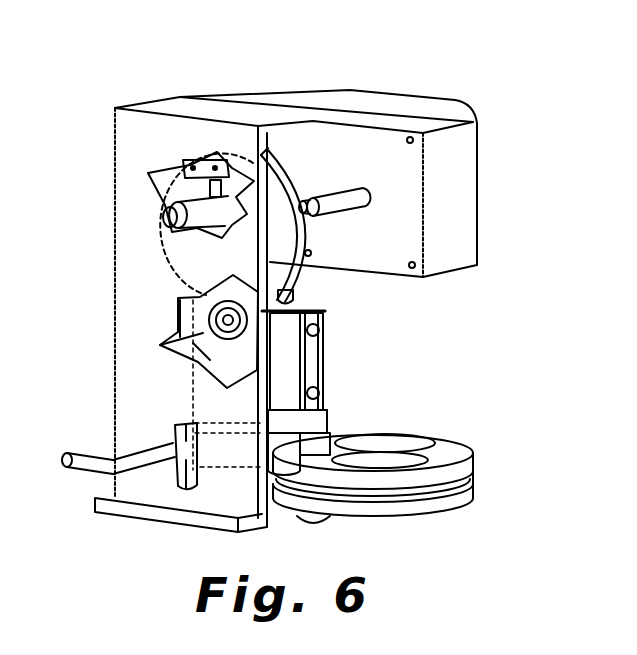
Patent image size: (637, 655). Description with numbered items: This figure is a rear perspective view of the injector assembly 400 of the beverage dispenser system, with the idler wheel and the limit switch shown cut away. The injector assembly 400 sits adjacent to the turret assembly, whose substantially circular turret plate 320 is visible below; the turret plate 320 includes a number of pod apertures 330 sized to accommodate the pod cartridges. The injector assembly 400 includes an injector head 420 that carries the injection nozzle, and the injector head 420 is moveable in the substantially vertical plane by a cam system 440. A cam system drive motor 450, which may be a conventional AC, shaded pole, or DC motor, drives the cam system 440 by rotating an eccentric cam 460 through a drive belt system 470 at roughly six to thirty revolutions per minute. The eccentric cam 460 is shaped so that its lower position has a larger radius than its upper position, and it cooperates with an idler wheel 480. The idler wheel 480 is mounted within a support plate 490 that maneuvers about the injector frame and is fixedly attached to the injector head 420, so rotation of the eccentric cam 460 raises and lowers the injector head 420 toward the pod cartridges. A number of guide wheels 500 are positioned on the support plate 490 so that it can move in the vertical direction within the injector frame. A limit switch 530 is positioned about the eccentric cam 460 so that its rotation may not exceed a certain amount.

The injector assembly 400 is at (202, 64).
The cam system drive motor 450 is at (456, 167).
The drive belt system 470 is at (357, 187).
The eccentric cam 460 is at (284, 168).
The cam system 440 is at (166, 258).
The limit switch 530 is at (153, 140).
The support plate 490 is at (208, 338).
The idler wheel 480 is at (280, 312).
The guide wheels 500 is at (313, 330).
The injector head 420 is at (317, 432).
The pod apertures 330 is at (427, 442).
The turret plate 320 is at (470, 498).